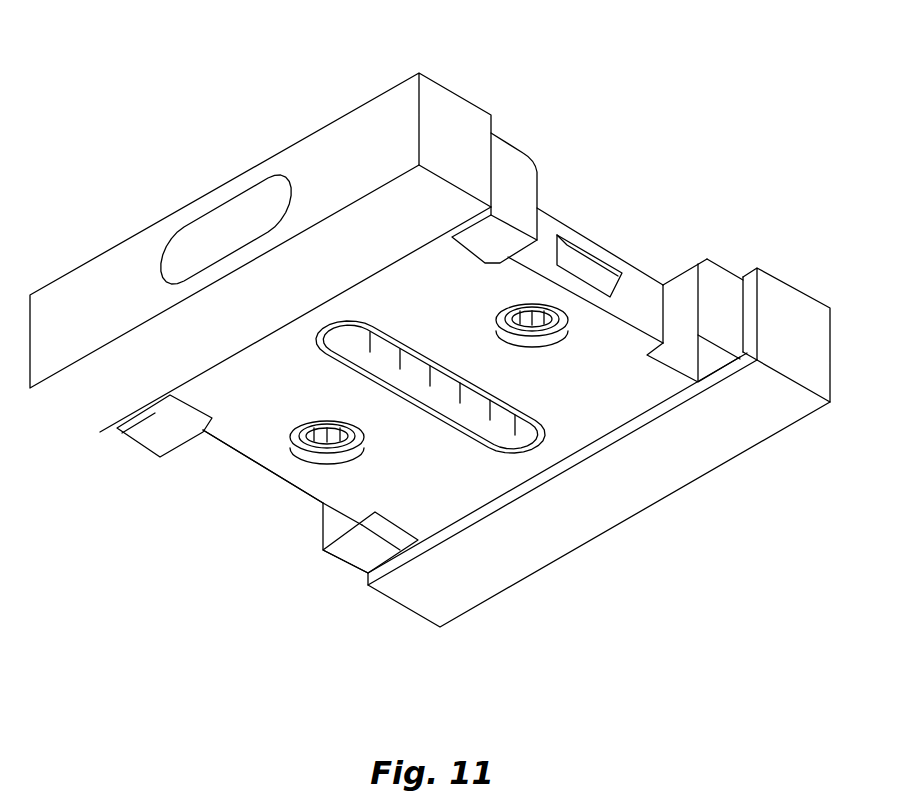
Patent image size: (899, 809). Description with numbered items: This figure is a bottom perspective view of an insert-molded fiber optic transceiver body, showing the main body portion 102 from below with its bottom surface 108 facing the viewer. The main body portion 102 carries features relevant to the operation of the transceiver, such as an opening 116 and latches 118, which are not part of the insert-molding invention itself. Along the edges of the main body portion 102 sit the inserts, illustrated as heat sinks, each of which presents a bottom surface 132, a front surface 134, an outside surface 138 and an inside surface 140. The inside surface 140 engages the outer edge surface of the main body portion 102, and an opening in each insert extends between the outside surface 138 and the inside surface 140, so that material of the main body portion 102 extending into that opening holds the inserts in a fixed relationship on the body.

The main body portion 102 is at (240, 457).
The bottom surface 108 is at (571, 403).
The opening 116 is at (433, 334).
The latches 118 is at (608, 255).
The bottom surface 132 is at (231, 316).
The front surface 134 is at (447, 92).
The outside surface 138 is at (78, 321).
The inside surface 140 is at (364, 575).